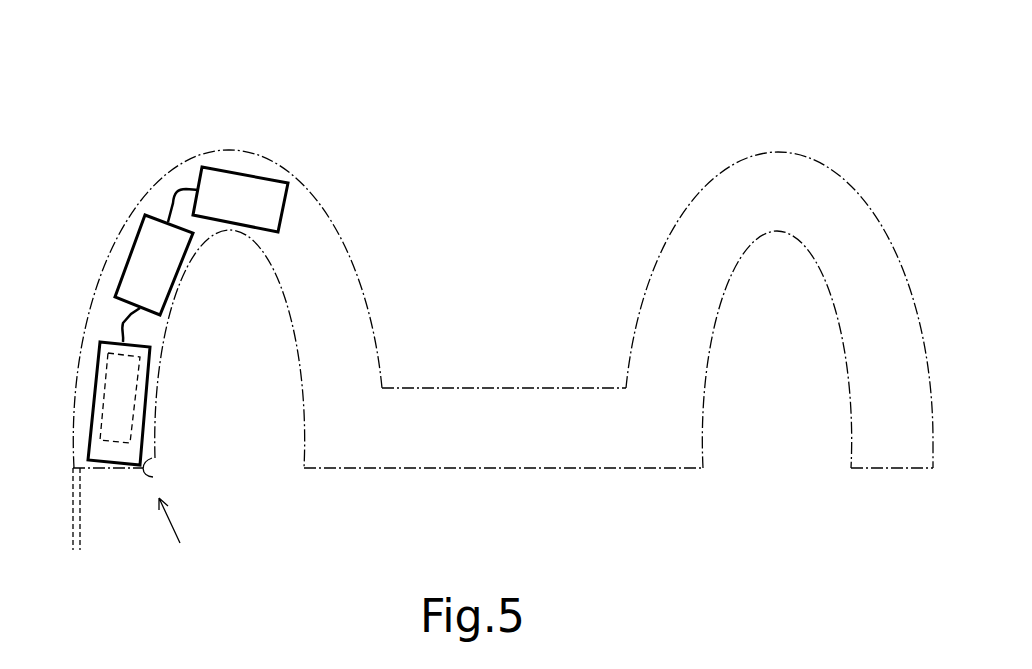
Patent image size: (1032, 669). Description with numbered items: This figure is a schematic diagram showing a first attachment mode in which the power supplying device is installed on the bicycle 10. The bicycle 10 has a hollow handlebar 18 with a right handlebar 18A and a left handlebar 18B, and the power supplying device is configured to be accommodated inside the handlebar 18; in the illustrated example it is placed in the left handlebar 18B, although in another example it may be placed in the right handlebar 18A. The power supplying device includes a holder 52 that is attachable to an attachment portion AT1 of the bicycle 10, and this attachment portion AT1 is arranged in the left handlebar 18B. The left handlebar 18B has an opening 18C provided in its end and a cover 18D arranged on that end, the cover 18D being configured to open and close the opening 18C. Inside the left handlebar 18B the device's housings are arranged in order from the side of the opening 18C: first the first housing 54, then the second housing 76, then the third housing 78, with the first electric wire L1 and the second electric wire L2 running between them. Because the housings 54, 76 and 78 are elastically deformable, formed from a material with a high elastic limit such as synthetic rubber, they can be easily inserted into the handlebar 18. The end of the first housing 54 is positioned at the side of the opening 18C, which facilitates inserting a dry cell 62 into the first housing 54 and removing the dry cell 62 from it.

The bicycle 10 is at (674, 77).
The handlebar 18 is at (686, 527).
The right handlebar 18A is at (787, 152).
The left handlebar 18B is at (245, 150).
The opening 18C is at (153, 477).
The cover 18D is at (74, 552).
The holder 52 is at (66, 346).
The first housing 54 is at (150, 360).
The dry cell 62 is at (138, 399).
The second housing 76 is at (139, 221).
The third housing 78 is at (287, 202).
The first electric wire L1 is at (121, 323).
The second electric wire L2 is at (176, 189).
The attachment portion AT1 is at (180, 538).